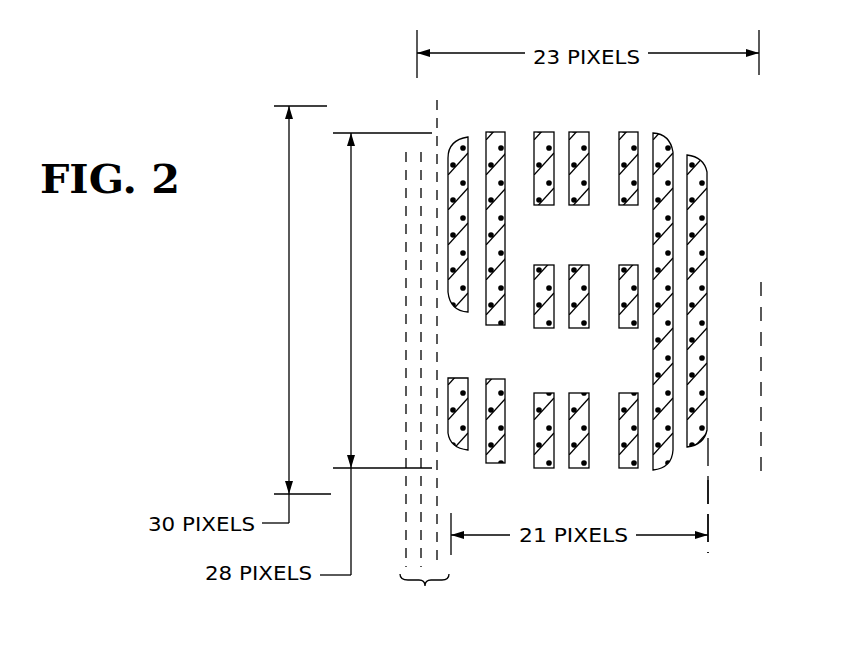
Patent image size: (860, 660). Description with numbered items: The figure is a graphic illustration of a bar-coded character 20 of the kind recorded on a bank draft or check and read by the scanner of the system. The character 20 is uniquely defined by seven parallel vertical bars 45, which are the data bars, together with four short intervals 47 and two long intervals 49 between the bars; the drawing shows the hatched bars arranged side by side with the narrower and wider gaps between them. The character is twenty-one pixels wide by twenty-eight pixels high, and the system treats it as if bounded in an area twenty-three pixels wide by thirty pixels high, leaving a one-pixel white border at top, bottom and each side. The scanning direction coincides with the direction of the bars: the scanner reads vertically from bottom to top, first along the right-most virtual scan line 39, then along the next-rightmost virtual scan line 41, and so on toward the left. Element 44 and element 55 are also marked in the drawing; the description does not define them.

The bar-coded character 20 is at (632, 131).
The short intervals 47 is at (478, 137).
The long intervals 49 is at (600, 136).
The parallel vertical bars 45 is at (693, 157).
The right character boundary 44 is at (708, 450).
The next-rightmost virtual scan line 41 is at (707, 488).
The right-most virtual scan line 39 is at (763, 485).
The left margin pixel columns 55 is at (427, 585).